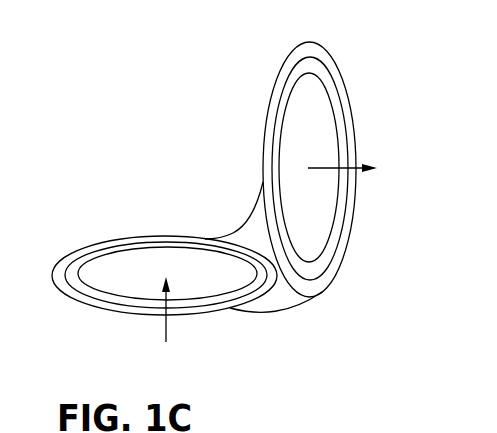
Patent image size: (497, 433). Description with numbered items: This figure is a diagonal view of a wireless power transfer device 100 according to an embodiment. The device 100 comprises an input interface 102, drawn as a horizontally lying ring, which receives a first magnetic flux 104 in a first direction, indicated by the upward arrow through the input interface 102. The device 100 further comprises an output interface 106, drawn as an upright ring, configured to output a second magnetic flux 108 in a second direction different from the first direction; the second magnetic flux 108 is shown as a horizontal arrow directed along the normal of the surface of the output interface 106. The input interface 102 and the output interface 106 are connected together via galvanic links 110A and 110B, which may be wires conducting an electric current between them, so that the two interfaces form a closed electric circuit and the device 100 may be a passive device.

The wireless power transfer device 100 is at (185, 110).
The input interface 102 is at (77, 251).
The first magnetic flux 104 is at (165, 329).
The output interface 106 is at (336, 66).
The second magnetic flux 108 is at (358, 165).
The galvanic link 110A is at (294, 312).
The galvanic link 110B is at (232, 226).